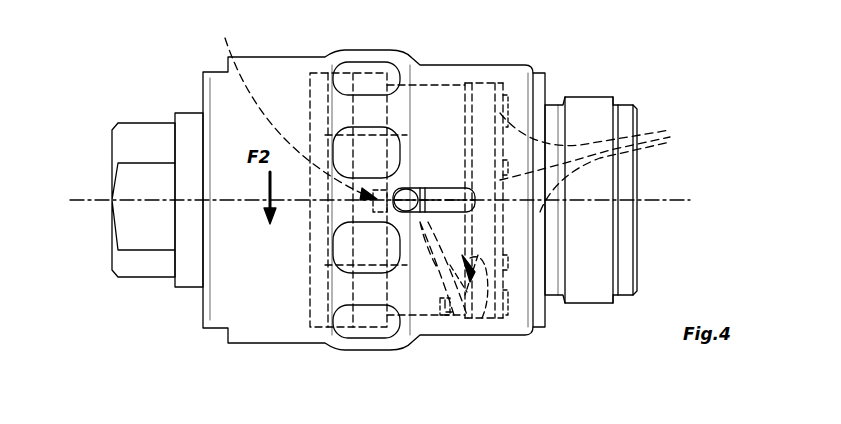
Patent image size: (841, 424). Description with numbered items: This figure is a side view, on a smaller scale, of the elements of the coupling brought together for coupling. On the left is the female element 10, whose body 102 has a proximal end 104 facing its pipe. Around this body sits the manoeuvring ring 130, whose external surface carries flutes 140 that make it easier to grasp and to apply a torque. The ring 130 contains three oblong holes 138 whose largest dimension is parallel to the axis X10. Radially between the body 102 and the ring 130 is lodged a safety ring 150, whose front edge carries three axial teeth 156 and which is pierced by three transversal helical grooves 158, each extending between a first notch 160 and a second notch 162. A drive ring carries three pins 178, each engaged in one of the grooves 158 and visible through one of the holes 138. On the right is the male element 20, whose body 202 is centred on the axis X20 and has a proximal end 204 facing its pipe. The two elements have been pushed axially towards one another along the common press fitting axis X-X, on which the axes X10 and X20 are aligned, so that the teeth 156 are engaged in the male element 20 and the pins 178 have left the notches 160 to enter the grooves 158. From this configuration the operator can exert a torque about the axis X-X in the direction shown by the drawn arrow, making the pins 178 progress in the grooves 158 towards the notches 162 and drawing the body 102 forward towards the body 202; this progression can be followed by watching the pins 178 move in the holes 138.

The female element 10 is at (175, 92).
The body 102 is at (190, 268).
The proximal end 104 is at (145, 257).
The ring 130 is at (266, 72).
The flutes 140 is at (340, 246).
The first notch 160 is at (292, 111).
The oblong holes 138 is at (445, 185).
The pins 178 is at (406, 188).
The safety ring 150 is at (425, 300).
The second notch 162 is at (454, 308).
The helical grooves 158 is at (478, 280).
The axial teeth 156 is at (602, 162).
The male element 20 is at (585, 82).
The body 202 is at (590, 282).
The proximal end 204 is at (628, 117).
The axis X10 is at (92, 200).
The axis X20 is at (672, 200).
The press fitting axis X-X is at (250, 200).